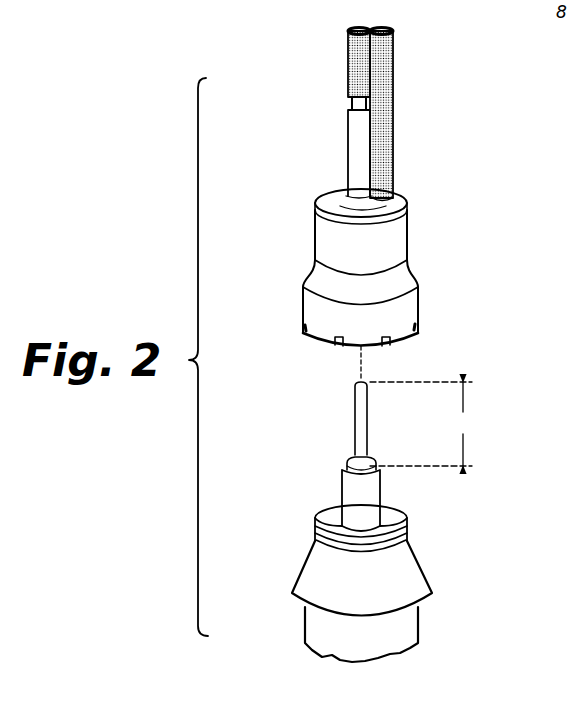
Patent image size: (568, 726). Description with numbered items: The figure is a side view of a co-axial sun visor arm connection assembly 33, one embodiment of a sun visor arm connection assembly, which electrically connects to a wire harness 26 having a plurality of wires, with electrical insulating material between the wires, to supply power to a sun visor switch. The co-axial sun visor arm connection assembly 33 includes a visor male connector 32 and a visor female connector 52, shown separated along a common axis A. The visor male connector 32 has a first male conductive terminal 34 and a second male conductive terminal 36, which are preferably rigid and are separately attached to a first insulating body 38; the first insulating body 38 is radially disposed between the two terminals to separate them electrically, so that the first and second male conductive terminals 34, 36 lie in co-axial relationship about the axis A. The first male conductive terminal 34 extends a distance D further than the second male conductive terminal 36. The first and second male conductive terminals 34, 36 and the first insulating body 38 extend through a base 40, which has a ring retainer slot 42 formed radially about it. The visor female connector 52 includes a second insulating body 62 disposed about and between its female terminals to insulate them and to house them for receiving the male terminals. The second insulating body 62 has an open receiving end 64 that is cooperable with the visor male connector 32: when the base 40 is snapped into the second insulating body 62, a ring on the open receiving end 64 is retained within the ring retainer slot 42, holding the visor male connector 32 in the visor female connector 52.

The wire harness 26 is at (348, 83).
The co-axial sun visor arm connection assembly 33 is at (276, 289).
The visor female connector 52 is at (384, 259).
The second insulating body 62 is at (315, 232).
The open receiving end 64 is at (418, 313).
The visor male connector 32 is at (348, 456).
The first male conductive terminal 34 is at (355, 410).
The first insulating body 38 is at (350, 456).
The second male conductive terminal 36 is at (372, 495).
The base 40 is at (320, 510).
The ring retainer slot 42 is at (430, 552).
The axis A is at (358, 368).
The distance D is at (421, 424).